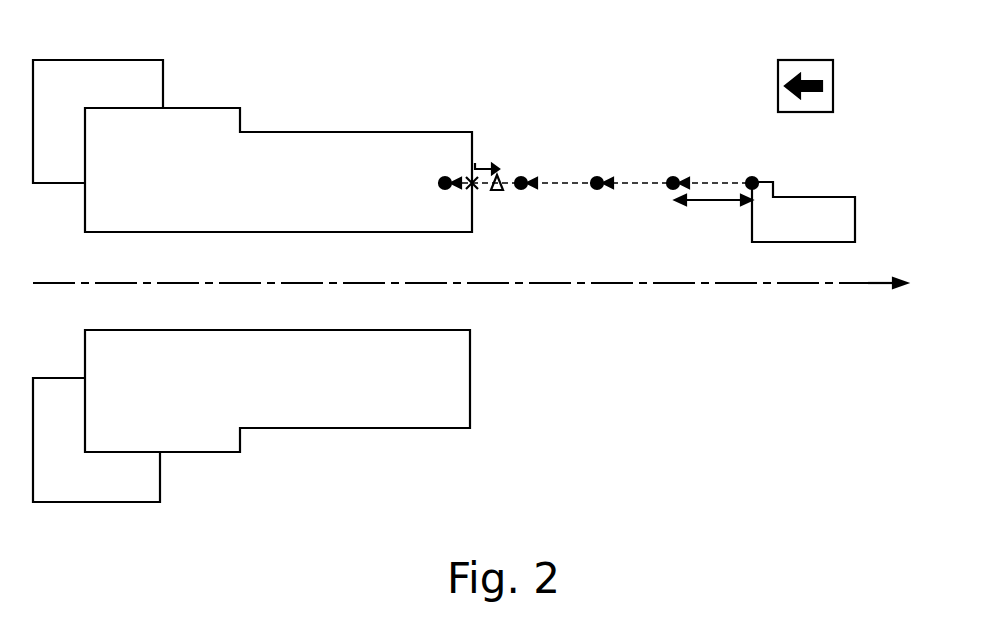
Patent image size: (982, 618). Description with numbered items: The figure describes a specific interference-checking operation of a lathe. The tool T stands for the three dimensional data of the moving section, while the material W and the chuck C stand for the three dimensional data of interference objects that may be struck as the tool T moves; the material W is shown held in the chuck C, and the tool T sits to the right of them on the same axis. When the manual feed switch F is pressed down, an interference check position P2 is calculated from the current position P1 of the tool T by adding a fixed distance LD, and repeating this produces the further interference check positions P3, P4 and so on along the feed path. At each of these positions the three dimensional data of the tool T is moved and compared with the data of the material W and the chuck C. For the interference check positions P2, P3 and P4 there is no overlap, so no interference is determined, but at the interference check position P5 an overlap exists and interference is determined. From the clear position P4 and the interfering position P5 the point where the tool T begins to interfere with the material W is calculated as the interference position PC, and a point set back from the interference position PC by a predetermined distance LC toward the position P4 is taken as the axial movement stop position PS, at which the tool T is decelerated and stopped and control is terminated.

The chuck C is at (133, 60).
The material W is at (293, 132).
The manual feed switch F is at (810, 60).
The tool T is at (820, 197).
The current position P1 is at (754, 177).
The interference check position P2 is at (676, 177).
The interference check position P3 is at (600, 177).
The interference check position P4 is at (524, 177).
The interference check position P5 is at (447, 176).
The interference position PC is at (471, 195).
The axial movement stop position PS is at (497, 195).
The predetermined distance LC is at (475, 163).
The fixed distance LD is at (700, 205).